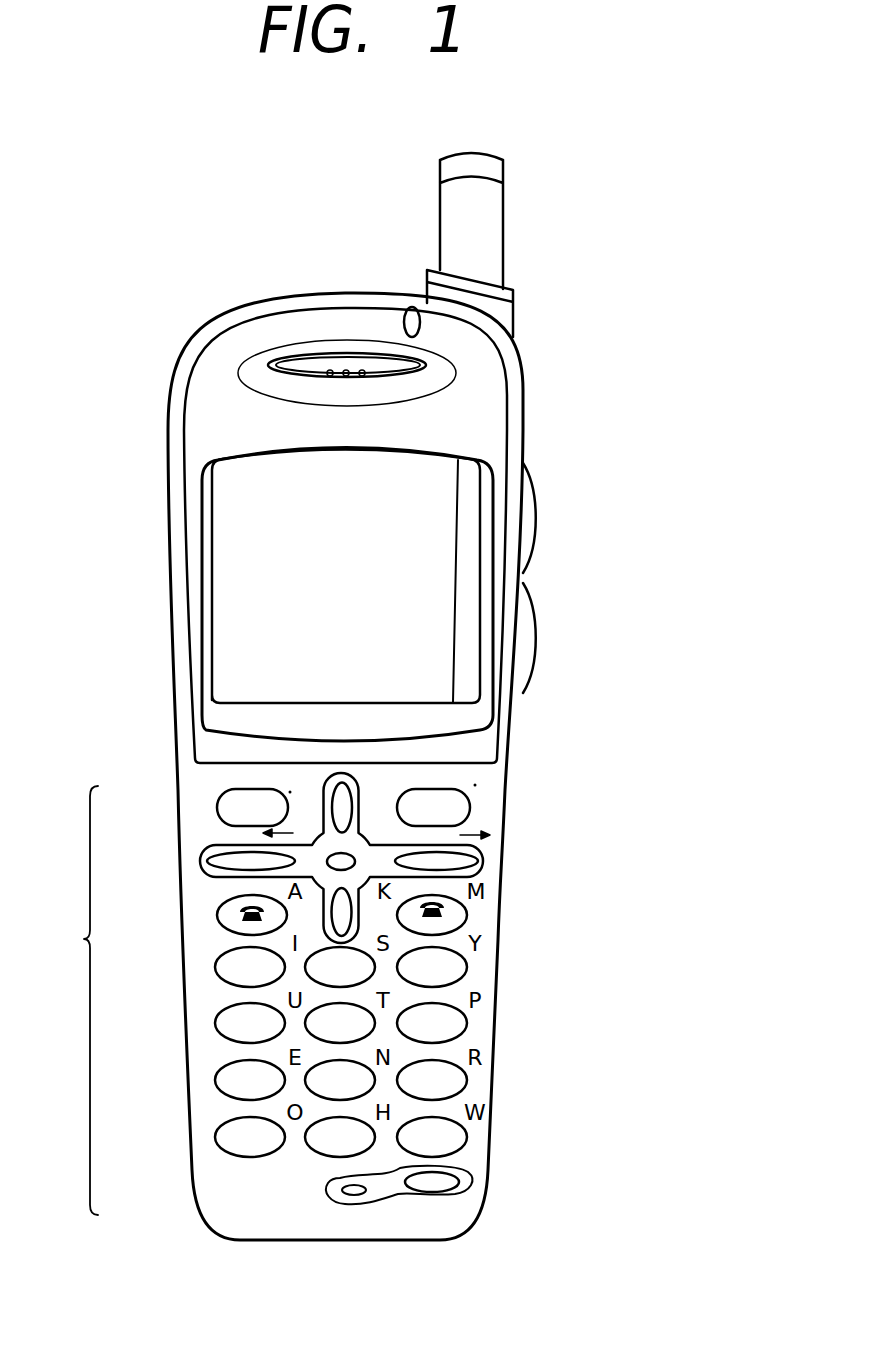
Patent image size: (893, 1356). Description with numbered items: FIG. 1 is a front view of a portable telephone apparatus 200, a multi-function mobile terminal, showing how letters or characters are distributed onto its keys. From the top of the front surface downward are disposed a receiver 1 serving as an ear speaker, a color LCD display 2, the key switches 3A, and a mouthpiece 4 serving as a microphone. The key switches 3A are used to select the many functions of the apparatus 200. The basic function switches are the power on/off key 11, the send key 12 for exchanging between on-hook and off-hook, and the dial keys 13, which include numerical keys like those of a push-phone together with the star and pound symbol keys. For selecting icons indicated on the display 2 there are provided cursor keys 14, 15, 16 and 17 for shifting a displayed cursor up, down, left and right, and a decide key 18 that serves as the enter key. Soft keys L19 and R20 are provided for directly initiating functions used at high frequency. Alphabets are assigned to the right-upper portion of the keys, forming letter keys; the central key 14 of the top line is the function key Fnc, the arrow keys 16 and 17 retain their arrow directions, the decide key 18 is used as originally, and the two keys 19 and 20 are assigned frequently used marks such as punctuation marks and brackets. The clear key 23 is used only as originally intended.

The portable telephone apparatus 200 is at (213, 320).
The receiver 1 is at (346, 370).
The display 2 is at (232, 553).
The key switches 3A is at (82, 936).
The soft key L 19 is at (217, 802).
The cursor key / function key Fnc 14 is at (400, 805).
The soft key R 20 is at (470, 813).
The cursor key (left arrow key) 16 is at (207, 858).
The cursor key (right arrow key) 17 is at (475, 850).
The decide key 18 is at (355, 861).
The cursor key 15 is at (330, 923).
The send key 12 is at (218, 908).
The power on/off key 11 is at (468, 912).
The dial keys 13 is at (467, 1078).
The clear key 23 is at (473, 1175).
The mouthpiece 4 is at (355, 1195).